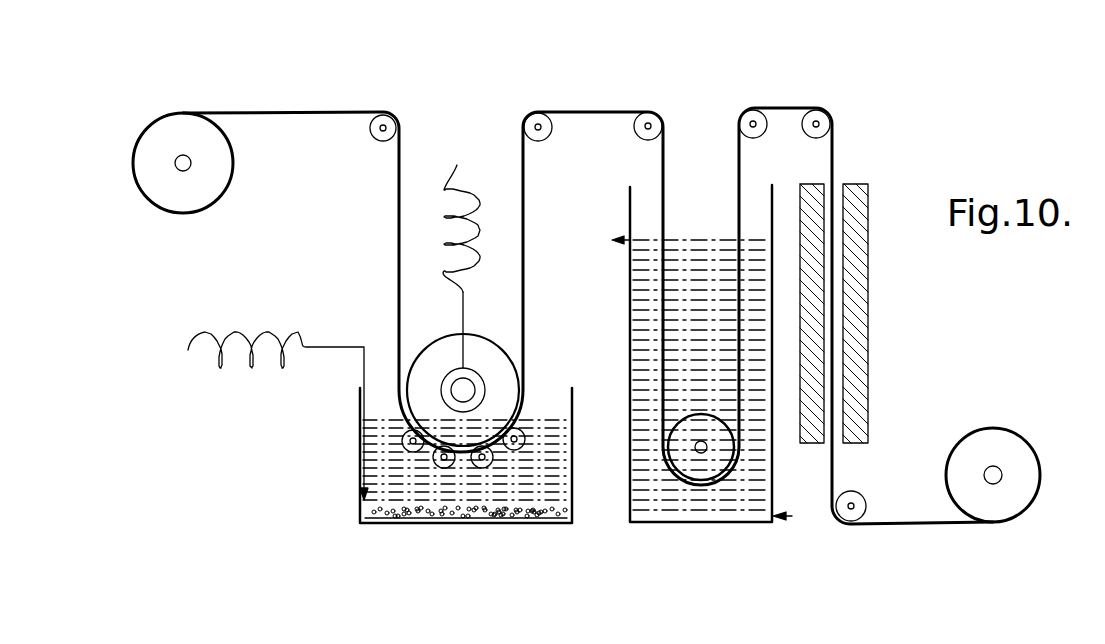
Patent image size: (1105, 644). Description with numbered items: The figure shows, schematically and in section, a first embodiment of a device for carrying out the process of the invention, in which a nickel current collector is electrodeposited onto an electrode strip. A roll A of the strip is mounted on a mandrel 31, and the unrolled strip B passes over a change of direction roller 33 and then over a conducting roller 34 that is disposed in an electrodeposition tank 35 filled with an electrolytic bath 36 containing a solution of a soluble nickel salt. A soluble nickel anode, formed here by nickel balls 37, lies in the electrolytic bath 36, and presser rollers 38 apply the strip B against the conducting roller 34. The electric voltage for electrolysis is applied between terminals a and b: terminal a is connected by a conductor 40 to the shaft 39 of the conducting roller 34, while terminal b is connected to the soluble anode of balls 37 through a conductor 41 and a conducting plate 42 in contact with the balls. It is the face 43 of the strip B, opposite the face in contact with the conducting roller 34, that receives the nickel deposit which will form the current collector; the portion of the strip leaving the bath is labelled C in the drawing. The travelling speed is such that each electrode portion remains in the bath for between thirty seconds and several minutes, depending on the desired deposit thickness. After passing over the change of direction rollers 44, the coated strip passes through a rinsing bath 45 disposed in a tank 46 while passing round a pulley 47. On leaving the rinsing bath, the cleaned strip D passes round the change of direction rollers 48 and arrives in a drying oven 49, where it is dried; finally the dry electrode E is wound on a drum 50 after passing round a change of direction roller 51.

The mandrel 31 is at (178, 166).
The change of direction roller 33 is at (378, 131).
The conducting roller 34 is at (437, 352).
The electrodeposition tank 35 is at (360, 452).
The electrolytic bath 36 is at (557, 490).
The nickel balls 37 is at (405, 519).
The presser rollers 38 is at (413, 452).
The shaft 39 is at (449, 378).
The conductor 40 is at (465, 292).
The conductor 41 is at (338, 350).
The conducting plate 42 is at (362, 500).
The face 43 is at (532, 341).
The change of direction rollers 44 is at (641, 121).
The rinsing bath 45 is at (658, 493).
The tank 46 is at (630, 197).
The pulley 47 is at (703, 470).
The change of direction rollers 48 is at (810, 119).
The drying oven 49 is at (857, 192).
The drum 50 is at (988, 501).
The change of direction roller 51 is at (853, 505).
The roll A is at (186, 131).
The strip B is at (295, 108).
The coated web C is at (527, 232).
The cleaned strip D is at (737, 168).
The dry electrode E is at (832, 466).
The terminal a is at (457, 160).
The terminal b is at (186, 355).